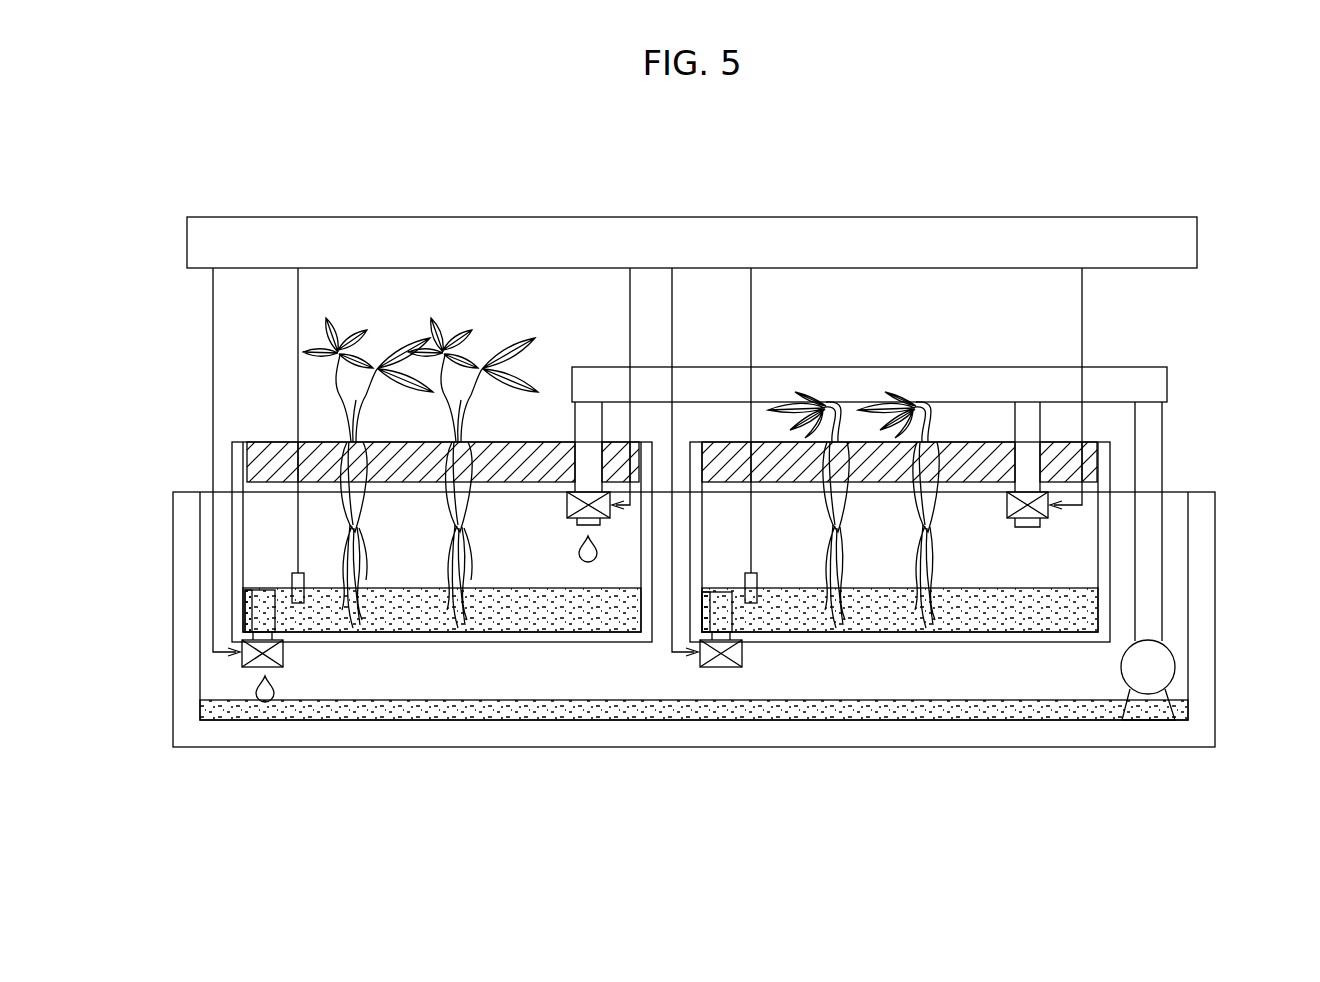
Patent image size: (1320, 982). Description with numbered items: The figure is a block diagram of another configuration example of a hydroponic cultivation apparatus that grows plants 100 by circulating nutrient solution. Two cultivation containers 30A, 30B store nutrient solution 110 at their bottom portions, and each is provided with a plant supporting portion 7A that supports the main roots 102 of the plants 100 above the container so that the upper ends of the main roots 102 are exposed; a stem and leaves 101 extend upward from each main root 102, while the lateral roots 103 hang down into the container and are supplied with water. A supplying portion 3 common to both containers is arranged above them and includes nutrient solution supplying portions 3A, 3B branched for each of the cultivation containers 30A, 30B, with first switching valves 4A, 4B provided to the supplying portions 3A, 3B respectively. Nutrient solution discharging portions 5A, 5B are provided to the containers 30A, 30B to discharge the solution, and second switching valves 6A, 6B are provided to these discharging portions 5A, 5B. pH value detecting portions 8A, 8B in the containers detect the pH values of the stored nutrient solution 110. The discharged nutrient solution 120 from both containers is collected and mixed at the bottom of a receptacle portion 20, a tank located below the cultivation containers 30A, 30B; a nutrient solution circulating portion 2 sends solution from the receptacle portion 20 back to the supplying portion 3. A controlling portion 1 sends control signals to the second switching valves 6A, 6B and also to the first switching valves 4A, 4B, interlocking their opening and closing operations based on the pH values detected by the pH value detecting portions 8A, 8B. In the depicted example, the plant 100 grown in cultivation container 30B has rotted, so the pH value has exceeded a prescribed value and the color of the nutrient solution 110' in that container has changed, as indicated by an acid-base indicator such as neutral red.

The controlling portion 1 is at (800, 217).
The nutrient solution circulating portion 2 is at (1125, 676).
The supplying portion 3 is at (990, 385).
The nutrient solution supplying portion 3A is at (575, 425).
The nutrient solution supplying portion 3B is at (1015, 425).
The first switching valve 4A is at (567, 505).
The first switching valve 4B is at (1007, 505).
The nutrient solution discharging portion 5A is at (258, 611).
The nutrient solution discharging portion 5B is at (727, 612).
The second switching valve 6A is at (248, 667).
The second switching valve 6B is at (702, 657).
The plant supporting portion 7A is at (265, 442).
The pH value detecting portion 8A is at (294, 575).
The pH value detecting portion 8B is at (748, 575).
The receptacle portion 20 is at (1214, 590).
The cultivation container 30A is at (232, 458).
The cultivation container 30B is at (1110, 540).
The plant 100 is at (574, 364).
The stem and leaves 101 is at (364, 352).
The main root 102 is at (448, 522).
The lateral roots 103 is at (446, 576).
The nutrient solution 110 is at (442, 585).
The nutrient solution 110' is at (900, 585).
The nutrient solution 120 is at (956, 700).